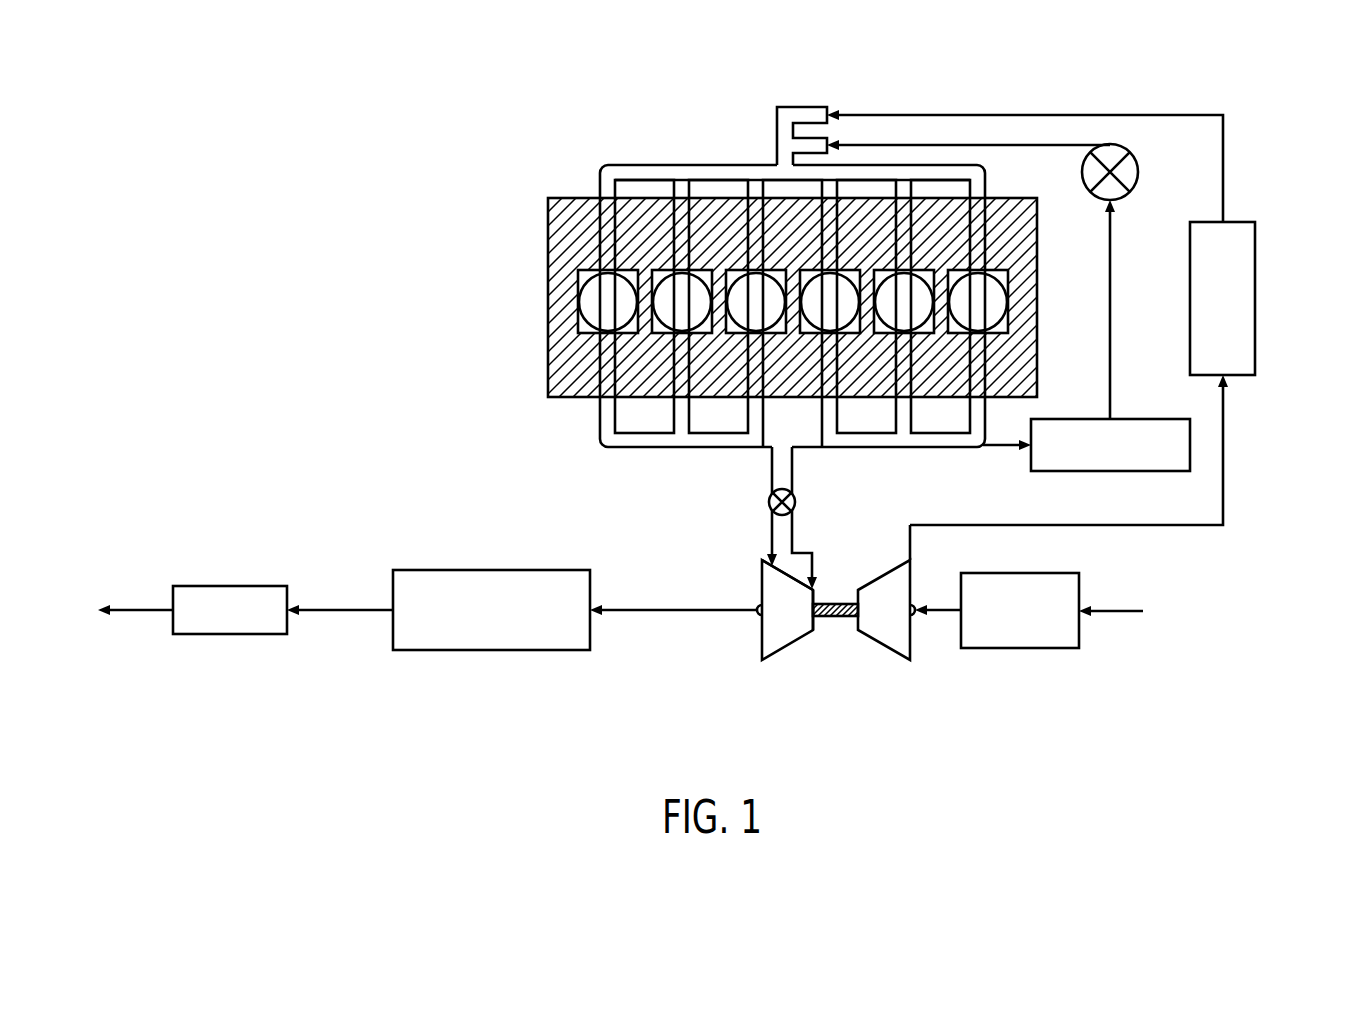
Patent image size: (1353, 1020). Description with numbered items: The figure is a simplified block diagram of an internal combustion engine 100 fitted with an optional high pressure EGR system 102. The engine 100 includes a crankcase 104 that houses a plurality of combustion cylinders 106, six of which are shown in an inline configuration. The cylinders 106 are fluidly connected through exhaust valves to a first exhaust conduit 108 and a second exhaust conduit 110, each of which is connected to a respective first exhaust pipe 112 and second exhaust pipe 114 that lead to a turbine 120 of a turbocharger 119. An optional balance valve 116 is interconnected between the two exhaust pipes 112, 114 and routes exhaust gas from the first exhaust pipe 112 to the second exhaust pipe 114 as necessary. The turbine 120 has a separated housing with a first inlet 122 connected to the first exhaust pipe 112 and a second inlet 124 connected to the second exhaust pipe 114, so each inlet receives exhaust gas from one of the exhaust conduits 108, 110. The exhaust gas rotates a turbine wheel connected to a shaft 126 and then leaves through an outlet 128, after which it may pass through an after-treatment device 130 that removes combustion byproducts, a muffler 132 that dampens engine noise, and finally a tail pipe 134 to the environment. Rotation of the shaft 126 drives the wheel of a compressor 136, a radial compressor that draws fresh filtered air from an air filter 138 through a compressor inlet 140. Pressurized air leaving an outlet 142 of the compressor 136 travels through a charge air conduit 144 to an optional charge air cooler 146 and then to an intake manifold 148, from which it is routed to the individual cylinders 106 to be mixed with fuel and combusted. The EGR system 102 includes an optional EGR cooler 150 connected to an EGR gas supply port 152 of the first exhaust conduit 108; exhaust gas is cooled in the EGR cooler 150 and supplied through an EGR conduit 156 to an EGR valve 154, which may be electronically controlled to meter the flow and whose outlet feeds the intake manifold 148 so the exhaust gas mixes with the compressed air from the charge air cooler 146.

The engine 100 is at (1168, 88).
The EGR system 102 is at (1200, 512).
The crankcase 104 is at (557, 213).
The combustion cylinders 106 is at (600, 312).
The first exhaust conduit 108 is at (880, 450).
The second exhaust conduit 110 is at (661, 450).
The first exhaust pipe 112 is at (795, 455).
The second exhaust pipe 114 is at (770, 463).
The balance valve 116 is at (795, 508).
The turbocharger 119 is at (848, 712).
The turbine 120 is at (795, 656).
The first inlet 122 is at (816, 588).
The second inlet 124 is at (776, 568).
The shaft 126 is at (828, 618).
The outlet 128 is at (757, 614).
The after-treatment device 130 is at (492, 651).
The muffler 132 is at (230, 636).
The tail pipe 134 is at (142, 612).
The compressor 136 is at (878, 655).
The air filter 138 is at (1052, 649).
The compressor inlet 140 is at (915, 614).
The outlet 142 is at (890, 568).
The charge air conduit 144 is at (1226, 438).
The charge air cooler 146 is at (1248, 246).
The intake manifold 148 is at (804, 110).
The EGR cooler 150 is at (1052, 472).
The EGR gas supply port 152 is at (975, 450).
The EGR valve 154 is at (1130, 192).
The EGR conduit 156 is at (1112, 347).